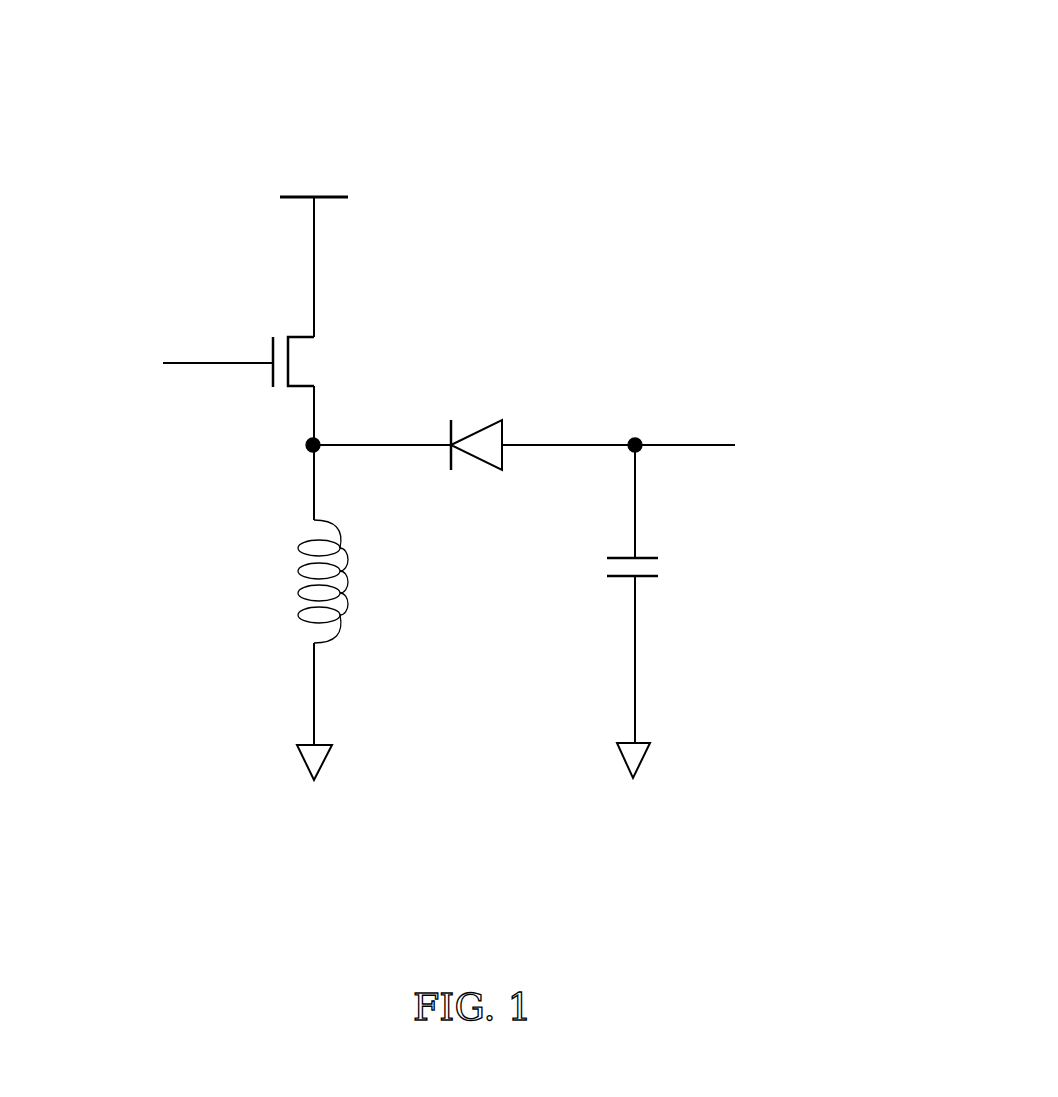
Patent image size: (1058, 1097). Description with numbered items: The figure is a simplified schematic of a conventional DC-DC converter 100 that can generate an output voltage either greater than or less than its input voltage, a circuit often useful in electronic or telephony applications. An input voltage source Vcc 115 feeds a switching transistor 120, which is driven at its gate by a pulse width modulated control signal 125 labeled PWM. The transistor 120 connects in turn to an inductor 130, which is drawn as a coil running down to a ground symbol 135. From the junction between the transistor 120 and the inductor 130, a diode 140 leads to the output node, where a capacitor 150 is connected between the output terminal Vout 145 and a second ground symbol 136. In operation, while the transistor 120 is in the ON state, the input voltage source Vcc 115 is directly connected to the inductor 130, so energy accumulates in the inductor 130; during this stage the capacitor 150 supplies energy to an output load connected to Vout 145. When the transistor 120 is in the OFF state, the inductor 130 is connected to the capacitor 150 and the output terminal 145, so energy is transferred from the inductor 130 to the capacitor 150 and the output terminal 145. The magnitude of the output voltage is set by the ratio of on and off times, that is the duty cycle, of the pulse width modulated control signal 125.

The DC-DC converter 100 is at (610, 122).
The input voltage source Vcc 115 is at (364, 168).
The switching transistor 120 is at (325, 365).
The pulse width modulated control signal 125 is at (177, 346).
The inductor 130 is at (285, 575).
The ground 135 is at (340, 764).
The ground 136 is at (660, 765).
The diode 140 is at (466, 418).
The output terminal Vout 145 is at (663, 408).
The capacitor 150 is at (671, 586).